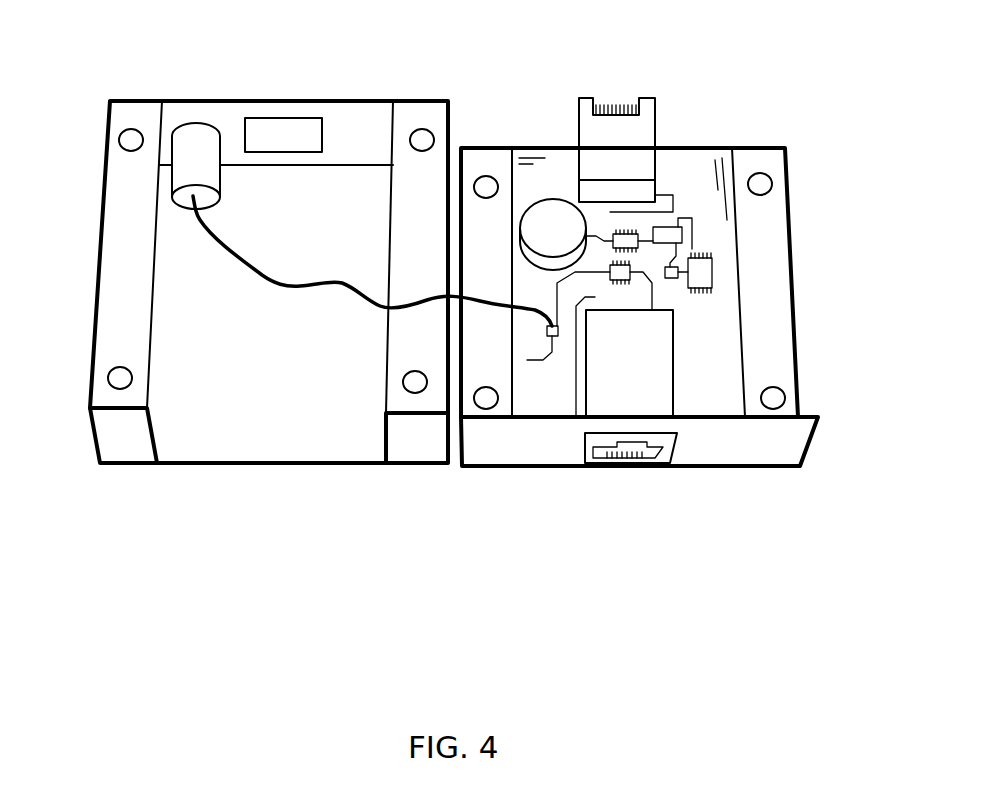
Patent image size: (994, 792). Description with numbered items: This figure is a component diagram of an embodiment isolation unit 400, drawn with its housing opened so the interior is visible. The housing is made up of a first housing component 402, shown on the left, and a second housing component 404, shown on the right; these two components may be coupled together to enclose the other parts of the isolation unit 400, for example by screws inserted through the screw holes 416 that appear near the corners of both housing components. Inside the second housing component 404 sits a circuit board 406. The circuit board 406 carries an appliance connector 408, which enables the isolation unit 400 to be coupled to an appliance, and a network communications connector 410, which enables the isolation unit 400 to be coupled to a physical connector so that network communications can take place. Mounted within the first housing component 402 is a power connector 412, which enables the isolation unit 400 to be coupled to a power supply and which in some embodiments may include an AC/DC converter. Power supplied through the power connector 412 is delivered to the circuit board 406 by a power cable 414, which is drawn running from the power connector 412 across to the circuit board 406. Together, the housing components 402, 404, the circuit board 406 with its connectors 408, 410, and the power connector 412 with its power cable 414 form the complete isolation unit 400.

The isolation unit 400 is at (262, 694).
The first housing component 402 is at (413, 452).
The second housing component 404 is at (760, 469).
The circuit board 406 is at (680, 177).
The appliance connector 408 is at (583, 103).
The network communications connector 410 is at (632, 467).
The power connector 412 is at (194, 122).
The power cable 414 is at (328, 289).
The screw holes 416 is at (120, 136).